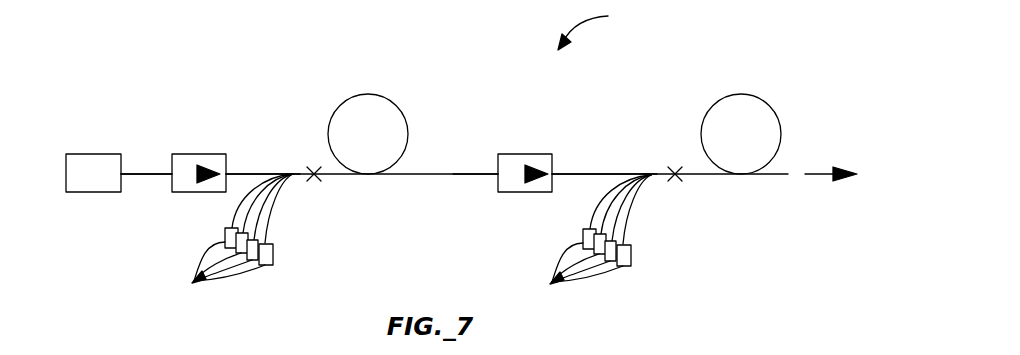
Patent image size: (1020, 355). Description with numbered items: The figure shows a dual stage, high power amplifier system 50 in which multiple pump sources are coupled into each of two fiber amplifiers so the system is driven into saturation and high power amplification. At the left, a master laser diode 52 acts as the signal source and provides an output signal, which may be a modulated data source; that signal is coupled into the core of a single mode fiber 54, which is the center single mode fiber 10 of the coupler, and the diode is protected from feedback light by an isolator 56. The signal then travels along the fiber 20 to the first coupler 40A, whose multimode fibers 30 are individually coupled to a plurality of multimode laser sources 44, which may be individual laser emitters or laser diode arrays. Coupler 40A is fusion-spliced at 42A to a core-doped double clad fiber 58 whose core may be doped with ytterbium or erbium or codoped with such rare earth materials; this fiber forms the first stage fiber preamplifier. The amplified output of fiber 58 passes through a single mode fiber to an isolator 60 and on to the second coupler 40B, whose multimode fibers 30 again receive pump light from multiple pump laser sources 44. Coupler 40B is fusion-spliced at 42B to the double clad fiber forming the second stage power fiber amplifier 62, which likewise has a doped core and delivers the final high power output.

The single mode fiber 10 is at (142, 174).
The optical fiber 20 is at (245, 173).
The multimode fibers 30 is at (233, 212).
The multimode laser sources 44 is at (390, 266).
The dual stage high power amplifier system 50 is at (600, 26).
The master laser diode 52 is at (108, 153).
The single mode fiber 54 is at (153, 173).
The isolator 56 is at (218, 153).
The core-doped double clad fiber 58 is at (372, 94).
The isolator 60 is at (530, 154).
The second stage power fiber amplifier 62 is at (753, 96).
The MMFs/SMF/DCF coupler 40A is at (293, 173).
The MMFs/SMF/DCF coupler 40B is at (650, 173).
The fusion splice 42A is at (314, 167).
The fusion splice 42B is at (675, 167).